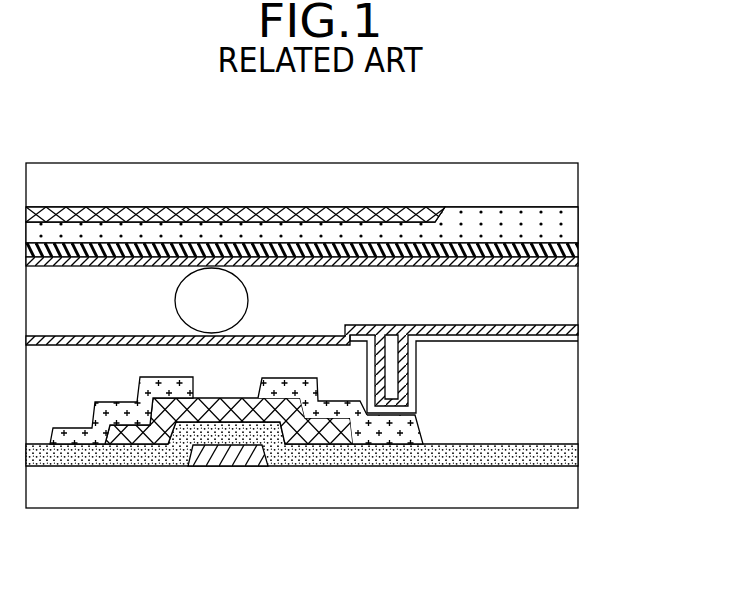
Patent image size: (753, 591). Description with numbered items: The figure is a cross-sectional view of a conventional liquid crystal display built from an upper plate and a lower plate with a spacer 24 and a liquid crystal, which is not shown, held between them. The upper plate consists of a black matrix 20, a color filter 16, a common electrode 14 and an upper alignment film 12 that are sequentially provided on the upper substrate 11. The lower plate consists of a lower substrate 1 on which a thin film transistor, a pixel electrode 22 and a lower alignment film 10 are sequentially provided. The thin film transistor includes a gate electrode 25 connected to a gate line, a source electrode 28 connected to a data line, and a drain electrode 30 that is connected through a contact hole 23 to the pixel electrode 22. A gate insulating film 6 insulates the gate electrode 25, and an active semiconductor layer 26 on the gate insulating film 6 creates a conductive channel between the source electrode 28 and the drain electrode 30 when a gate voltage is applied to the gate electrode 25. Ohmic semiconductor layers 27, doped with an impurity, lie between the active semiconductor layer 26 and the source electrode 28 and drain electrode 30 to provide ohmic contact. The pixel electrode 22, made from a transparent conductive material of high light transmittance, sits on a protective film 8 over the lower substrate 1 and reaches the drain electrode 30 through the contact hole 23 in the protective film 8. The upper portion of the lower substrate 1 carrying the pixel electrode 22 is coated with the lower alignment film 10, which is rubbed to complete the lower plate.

The lower substrate 1 is at (563, 486).
The gate insulating film 6 is at (565, 455).
The protective film 8 is at (563, 398).
The lower alignment film 10 is at (567, 328).
The upper substrate 11 is at (562, 182).
The upper alignment film 12 is at (572, 259).
The common electrode 14 is at (575, 246).
The color filter 16 is at (565, 217).
The black matrix 20 is at (250, 207).
The pixel electrode 22 is at (567, 340).
The contact hole 23 is at (390, 333).
The spacer 24 is at (236, 292).
The gate electrode 25 is at (230, 466).
The active semiconductor layer 26 is at (160, 442).
The ohmic semiconductor layer 27 is at (332, 422).
The source electrode 28 is at (100, 444).
The drain electrode 30 is at (407, 442).